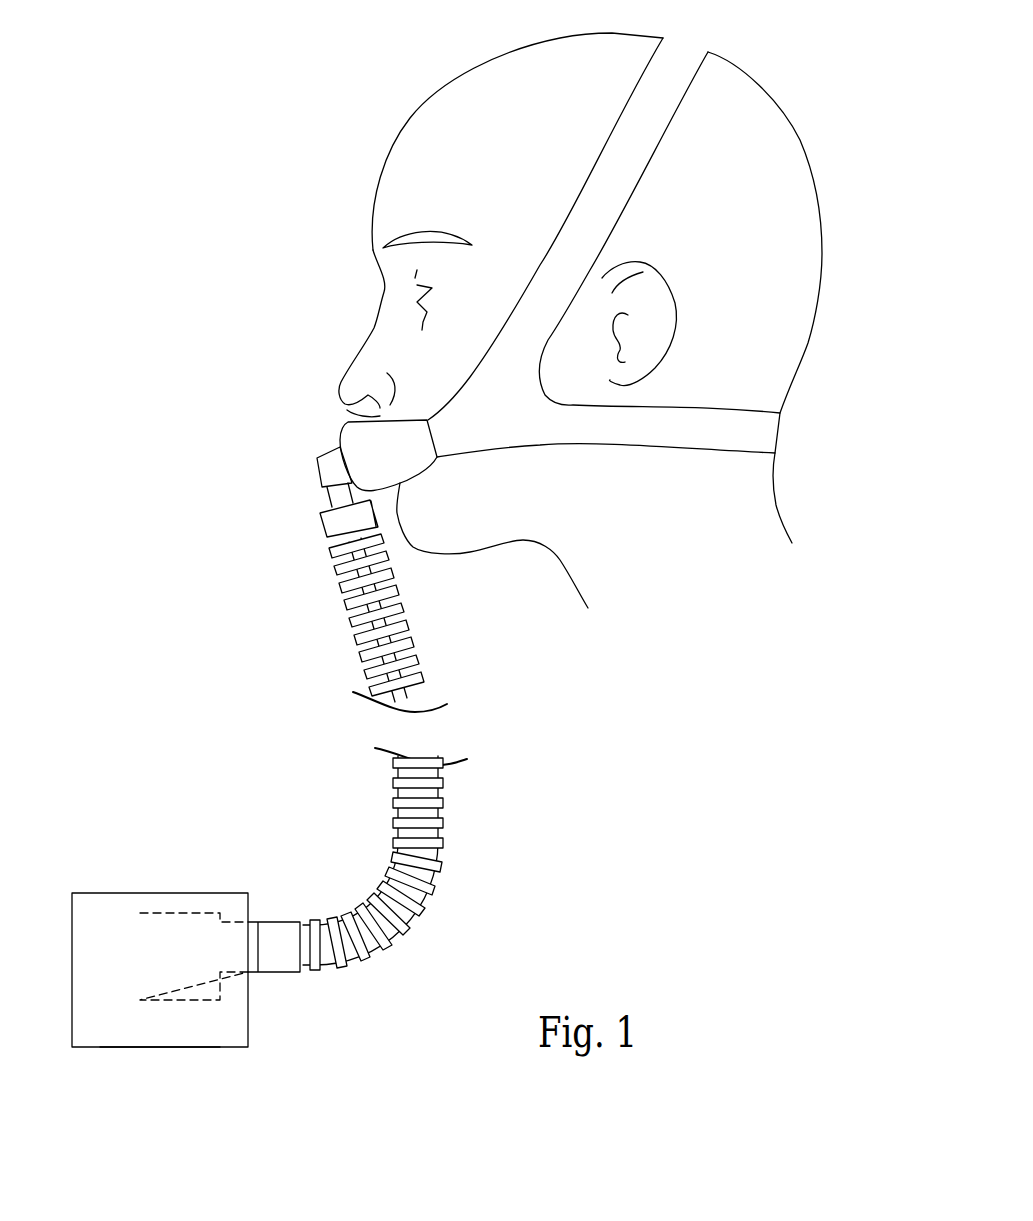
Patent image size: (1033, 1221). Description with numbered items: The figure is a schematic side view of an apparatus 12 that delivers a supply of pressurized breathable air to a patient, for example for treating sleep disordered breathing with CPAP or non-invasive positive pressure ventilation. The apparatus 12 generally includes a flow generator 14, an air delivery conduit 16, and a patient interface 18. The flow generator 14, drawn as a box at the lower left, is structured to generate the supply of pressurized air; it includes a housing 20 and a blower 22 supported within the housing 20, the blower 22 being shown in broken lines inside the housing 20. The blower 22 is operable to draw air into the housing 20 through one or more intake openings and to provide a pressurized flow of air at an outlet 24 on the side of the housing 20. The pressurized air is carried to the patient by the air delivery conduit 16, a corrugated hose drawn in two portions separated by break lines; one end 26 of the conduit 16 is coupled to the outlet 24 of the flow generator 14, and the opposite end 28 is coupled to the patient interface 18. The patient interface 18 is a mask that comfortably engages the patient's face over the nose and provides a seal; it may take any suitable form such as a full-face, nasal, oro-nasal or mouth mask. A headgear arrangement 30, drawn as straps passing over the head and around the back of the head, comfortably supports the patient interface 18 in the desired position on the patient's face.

The apparatus 12 is at (304, 454).
The flow generator 14 is at (110, 923).
The air delivery conduit 16 is at (430, 787).
The patient interface 18 is at (348, 438).
The housing 20 is at (148, 1047).
The blower 22 is at (197, 933).
The outlet 24 is at (250, 934).
The end 26 is at (308, 960).
The opposite end 28 is at (322, 525).
The headgear arrangement 30 is at (773, 432).